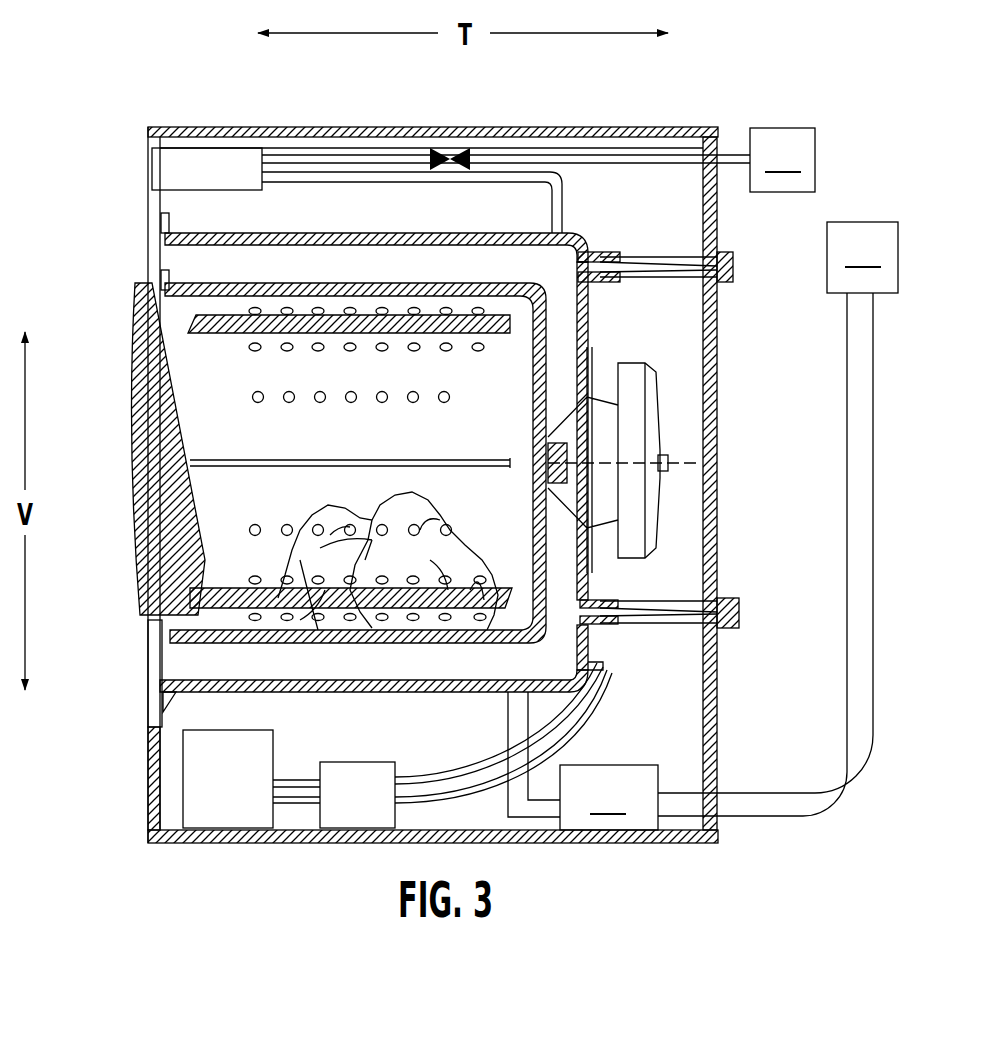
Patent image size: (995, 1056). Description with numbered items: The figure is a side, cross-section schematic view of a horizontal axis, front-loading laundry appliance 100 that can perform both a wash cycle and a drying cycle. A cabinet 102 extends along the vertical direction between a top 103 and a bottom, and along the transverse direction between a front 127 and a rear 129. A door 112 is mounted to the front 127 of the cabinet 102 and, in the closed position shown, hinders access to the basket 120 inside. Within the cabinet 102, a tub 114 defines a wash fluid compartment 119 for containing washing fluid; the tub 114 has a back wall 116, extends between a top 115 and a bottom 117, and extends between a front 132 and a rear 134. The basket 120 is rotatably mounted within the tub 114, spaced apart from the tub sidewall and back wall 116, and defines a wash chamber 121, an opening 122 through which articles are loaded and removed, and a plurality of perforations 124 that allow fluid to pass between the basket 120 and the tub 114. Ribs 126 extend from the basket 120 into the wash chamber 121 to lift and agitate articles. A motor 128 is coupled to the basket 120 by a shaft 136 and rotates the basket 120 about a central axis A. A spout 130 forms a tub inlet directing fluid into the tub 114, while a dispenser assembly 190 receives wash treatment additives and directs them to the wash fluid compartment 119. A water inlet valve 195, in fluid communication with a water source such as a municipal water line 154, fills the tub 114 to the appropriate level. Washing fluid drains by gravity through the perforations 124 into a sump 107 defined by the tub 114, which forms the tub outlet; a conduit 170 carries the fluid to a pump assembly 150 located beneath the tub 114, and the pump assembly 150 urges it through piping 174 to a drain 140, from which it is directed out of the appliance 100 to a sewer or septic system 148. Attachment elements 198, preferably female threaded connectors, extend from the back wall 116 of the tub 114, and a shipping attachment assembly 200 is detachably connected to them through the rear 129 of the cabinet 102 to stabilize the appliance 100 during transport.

The laundry appliance 100 is at (178, 60).
The cabinet 102 is at (719, 470).
The top 103 is at (733, 124).
The sump 107 is at (505, 693).
The door 112 is at (150, 492).
The tub 114 is at (582, 318).
The top 115 is at (362, 240).
The back wall 116 is at (592, 348).
The bottom 117 is at (335, 686).
The wash fluid compartment 119 is at (548, 664).
The basket 120 is at (352, 290).
The wash chamber 121 is at (217, 417).
The opening 122 is at (178, 320).
The perforations 124 is at (413, 400).
The ribs 126 is at (298, 460).
The front 127 is at (152, 627).
The motor 128 is at (635, 400).
The rear 129 is at (722, 297).
The spout 130 is at (558, 232).
The front 132 is at (178, 700).
The rear 134 is at (597, 232).
The shaft 136 is at (667, 472).
The drain 140 is at (740, 835).
The sewer or septic system 148 is at (862, 257).
The pump assembly 150 is at (609, 797).
The municipal water line 154 is at (782, 160).
The conduit 170 is at (528, 806).
The piping 174 is at (673, 807).
The dispenser assembly 190 is at (215, 170).
The water inlet valve 195 is at (452, 148).
The attachment elements 198 is at (578, 257).
The shipping attachment assembly 200 is at (727, 628).
The central axis A is at (683, 462).